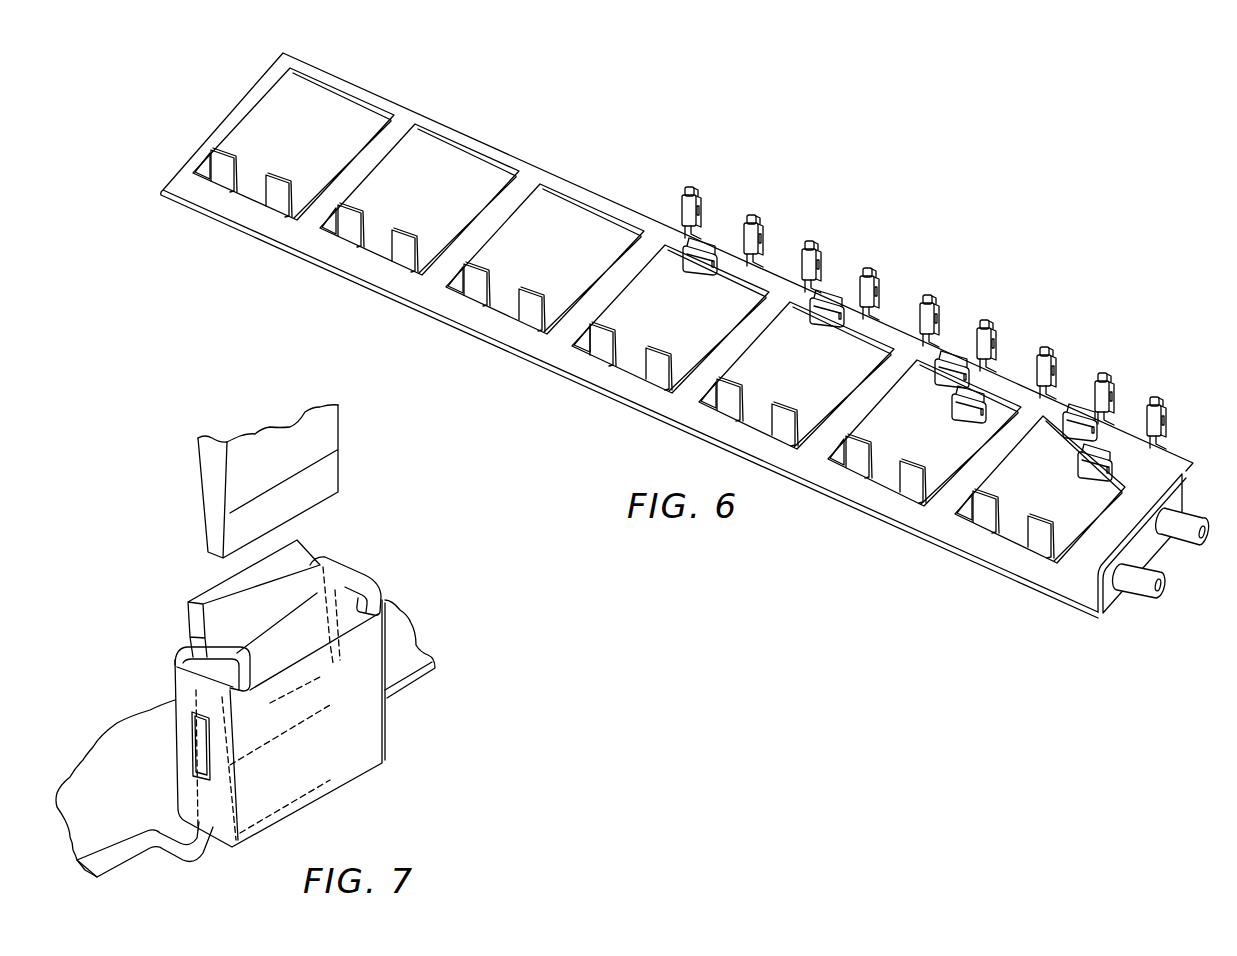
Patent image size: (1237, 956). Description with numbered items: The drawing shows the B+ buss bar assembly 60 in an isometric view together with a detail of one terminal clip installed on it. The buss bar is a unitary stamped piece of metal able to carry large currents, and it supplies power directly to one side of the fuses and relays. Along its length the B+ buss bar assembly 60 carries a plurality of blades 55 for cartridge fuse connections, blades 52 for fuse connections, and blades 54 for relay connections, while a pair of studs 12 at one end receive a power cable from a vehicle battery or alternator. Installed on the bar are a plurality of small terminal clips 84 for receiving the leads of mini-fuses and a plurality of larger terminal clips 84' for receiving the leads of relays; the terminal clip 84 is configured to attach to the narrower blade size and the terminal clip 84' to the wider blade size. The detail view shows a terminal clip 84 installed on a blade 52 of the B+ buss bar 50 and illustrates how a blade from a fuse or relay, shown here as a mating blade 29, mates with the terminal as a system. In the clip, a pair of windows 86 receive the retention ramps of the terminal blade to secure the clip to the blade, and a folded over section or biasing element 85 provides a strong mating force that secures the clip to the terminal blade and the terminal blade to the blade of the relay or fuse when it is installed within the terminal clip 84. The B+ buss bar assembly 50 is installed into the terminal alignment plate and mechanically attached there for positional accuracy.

In FIG. 6, the B+ buss bar assembly 60 is at (490, 128).
In FIG. 6, the blades 55 is at (220, 161).
In FIG. 6, the terminal clip 84 is at (865, 287).
In FIG. 7, the terminal clip 84 is at (319, 722).
In FIG. 6, the terminal clip 84' is at (792, 268).
In FIG. 6, the blades 54 is at (975, 392).
In FIG. 6, the blades 52 is at (1155, 442).
In FIG. 7, the blades 52 is at (232, 592).
In FIG. 6, the studs 12 is at (1143, 583).
In FIG. 7, the mating blade portion 29 is at (215, 466).
In FIG. 7, the folded over section or biasing element 85 is at (310, 605).
In FIG. 7, the windows 86 is at (192, 718).
In FIG. 7, the B+ buss bar assembly 50 is at (245, 738).